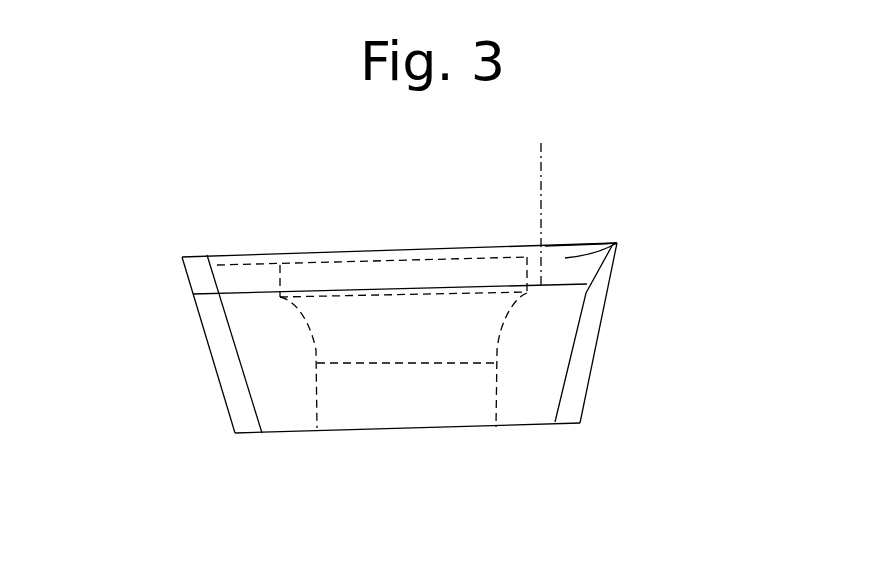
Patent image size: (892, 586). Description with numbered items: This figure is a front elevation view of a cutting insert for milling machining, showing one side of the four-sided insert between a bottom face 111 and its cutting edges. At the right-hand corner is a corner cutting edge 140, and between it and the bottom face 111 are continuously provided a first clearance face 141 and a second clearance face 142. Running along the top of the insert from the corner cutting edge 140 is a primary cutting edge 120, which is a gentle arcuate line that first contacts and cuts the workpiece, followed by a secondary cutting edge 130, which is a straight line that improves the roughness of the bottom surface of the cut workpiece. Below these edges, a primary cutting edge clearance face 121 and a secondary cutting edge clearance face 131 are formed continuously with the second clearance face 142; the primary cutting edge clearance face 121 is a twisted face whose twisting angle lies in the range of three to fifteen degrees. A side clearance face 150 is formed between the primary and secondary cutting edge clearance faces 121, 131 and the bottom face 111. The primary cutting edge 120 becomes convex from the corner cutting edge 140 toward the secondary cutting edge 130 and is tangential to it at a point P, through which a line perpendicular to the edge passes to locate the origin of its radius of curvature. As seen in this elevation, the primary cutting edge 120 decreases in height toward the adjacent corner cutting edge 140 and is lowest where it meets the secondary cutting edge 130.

The bottom face 111 is at (428, 428).
The primary cutting edge 120 is at (377, 250).
The primary cutting edge clearance face 121 is at (240, 284).
The secondary cutting edge 130 is at (565, 245).
The secondary cutting edge clearance face 131 is at (567, 278).
The corner cutting edge 140 is at (607, 241).
The first clearance face 141 is at (577, 390).
The second clearance face 142 is at (598, 270).
The side clearance face 150 is at (283, 405).
The point tangential to the secondary cutting edge P is at (542, 202).